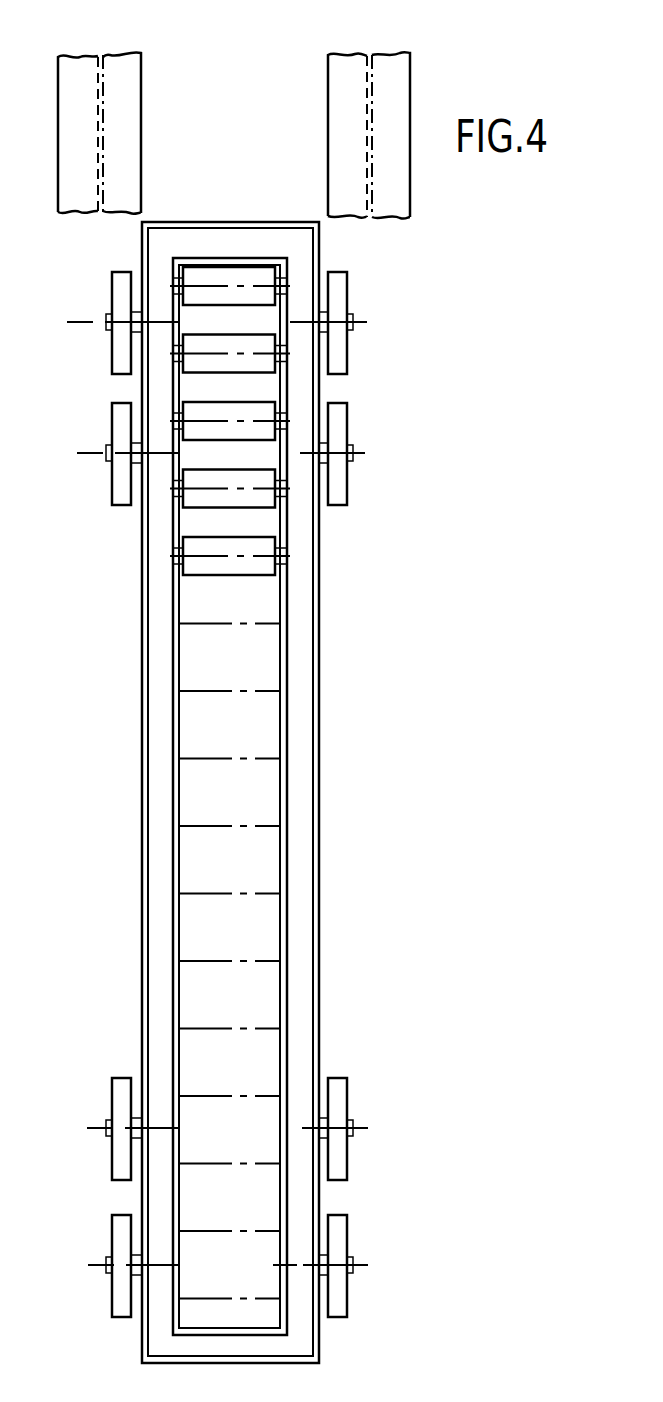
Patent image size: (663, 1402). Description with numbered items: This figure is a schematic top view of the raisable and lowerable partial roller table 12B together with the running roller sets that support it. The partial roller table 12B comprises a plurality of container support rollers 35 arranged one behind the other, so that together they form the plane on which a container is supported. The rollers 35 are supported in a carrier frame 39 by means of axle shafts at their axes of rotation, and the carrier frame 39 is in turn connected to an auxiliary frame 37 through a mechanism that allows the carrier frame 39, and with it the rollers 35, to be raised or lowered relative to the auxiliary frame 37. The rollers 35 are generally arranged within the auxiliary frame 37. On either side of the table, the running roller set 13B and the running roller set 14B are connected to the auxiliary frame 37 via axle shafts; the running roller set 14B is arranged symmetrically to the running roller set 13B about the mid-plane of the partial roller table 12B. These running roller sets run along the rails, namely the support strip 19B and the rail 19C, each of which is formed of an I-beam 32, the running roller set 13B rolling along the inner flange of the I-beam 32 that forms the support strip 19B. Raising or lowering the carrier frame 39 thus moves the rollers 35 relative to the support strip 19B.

The I-beam 32 is at (77, 68).
The rail 19C is at (103, 56).
The support strip 19B is at (358, 56).
The auxiliary frame 37 is at (312, 763).
The partial roller table 12B is at (287, 665).
The carrier frame 39 is at (283, 850).
The container support rollers 35 is at (268, 552).
The running roller set 14B is at (117, 1224).
The running roller set 13B is at (340, 1227).